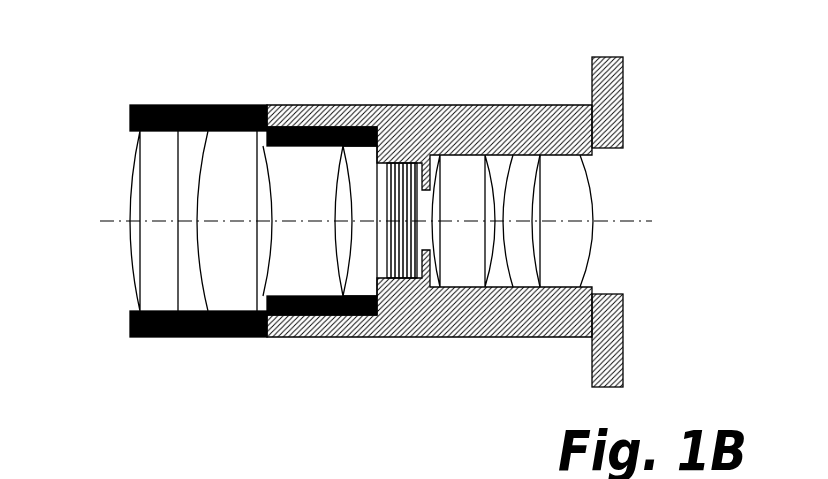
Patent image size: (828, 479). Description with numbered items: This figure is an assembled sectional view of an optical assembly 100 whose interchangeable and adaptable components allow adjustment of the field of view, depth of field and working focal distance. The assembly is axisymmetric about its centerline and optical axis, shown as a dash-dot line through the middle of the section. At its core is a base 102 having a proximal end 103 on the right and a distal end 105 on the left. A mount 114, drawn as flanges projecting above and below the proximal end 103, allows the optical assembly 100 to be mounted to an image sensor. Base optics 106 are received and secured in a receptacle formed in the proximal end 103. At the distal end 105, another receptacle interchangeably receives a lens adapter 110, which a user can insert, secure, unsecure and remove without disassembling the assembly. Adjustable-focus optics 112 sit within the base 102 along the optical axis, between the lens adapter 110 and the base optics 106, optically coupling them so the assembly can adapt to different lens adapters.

The optical assembly 100 is at (131, 407).
The base 102 is at (382, 103).
The proximal end 103 is at (638, 151).
The distal end 105 is at (266, 103).
The base optics 106 is at (598, 241).
The lens adapter 110 is at (239, 339).
The adjustable-focus optics 112 is at (408, 278).
The mount 114 is at (607, 70).